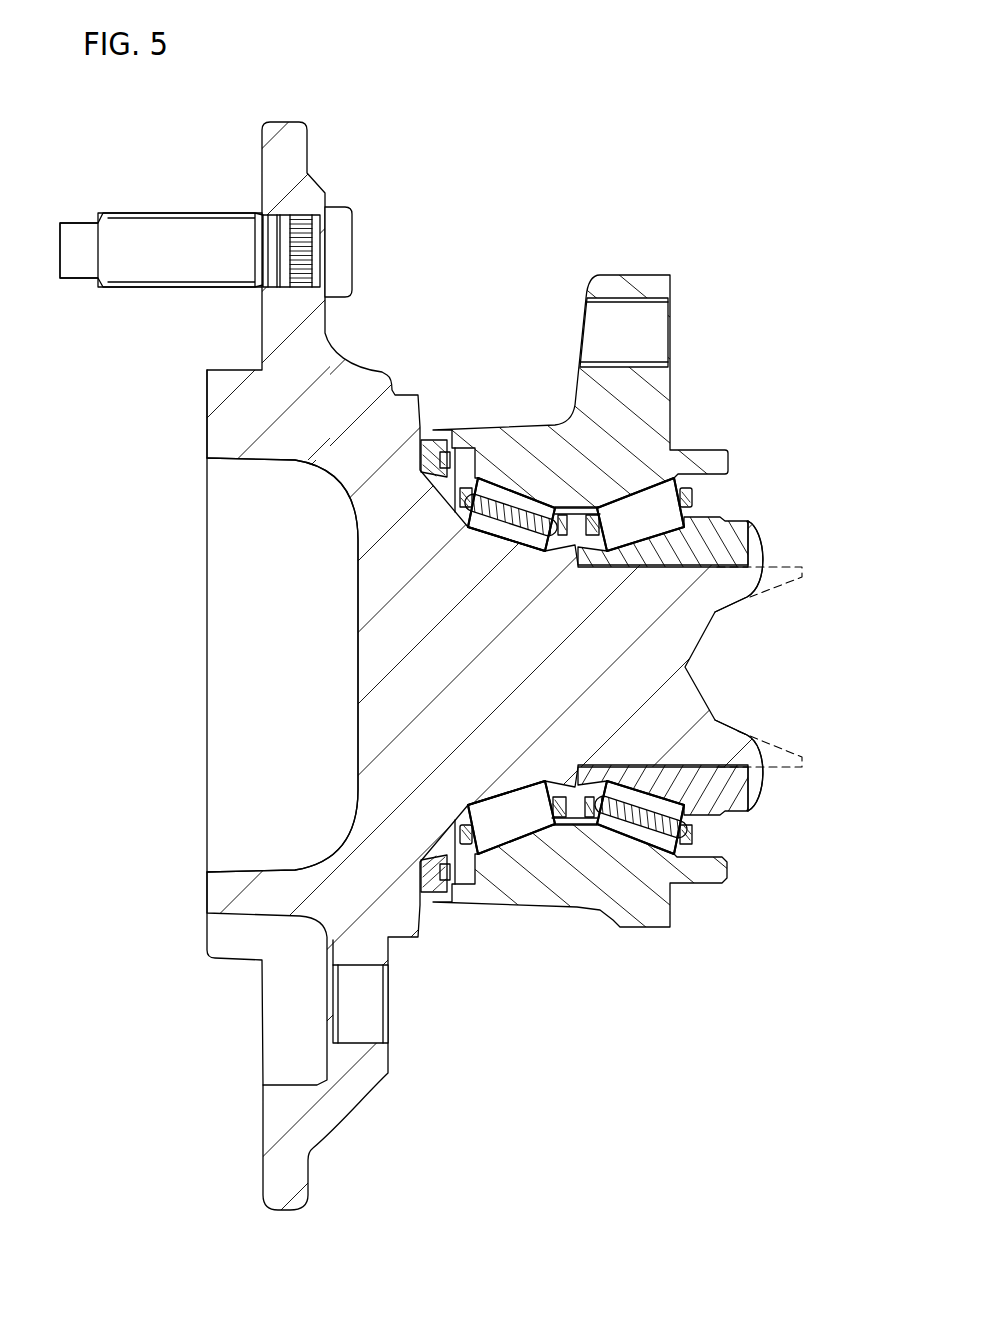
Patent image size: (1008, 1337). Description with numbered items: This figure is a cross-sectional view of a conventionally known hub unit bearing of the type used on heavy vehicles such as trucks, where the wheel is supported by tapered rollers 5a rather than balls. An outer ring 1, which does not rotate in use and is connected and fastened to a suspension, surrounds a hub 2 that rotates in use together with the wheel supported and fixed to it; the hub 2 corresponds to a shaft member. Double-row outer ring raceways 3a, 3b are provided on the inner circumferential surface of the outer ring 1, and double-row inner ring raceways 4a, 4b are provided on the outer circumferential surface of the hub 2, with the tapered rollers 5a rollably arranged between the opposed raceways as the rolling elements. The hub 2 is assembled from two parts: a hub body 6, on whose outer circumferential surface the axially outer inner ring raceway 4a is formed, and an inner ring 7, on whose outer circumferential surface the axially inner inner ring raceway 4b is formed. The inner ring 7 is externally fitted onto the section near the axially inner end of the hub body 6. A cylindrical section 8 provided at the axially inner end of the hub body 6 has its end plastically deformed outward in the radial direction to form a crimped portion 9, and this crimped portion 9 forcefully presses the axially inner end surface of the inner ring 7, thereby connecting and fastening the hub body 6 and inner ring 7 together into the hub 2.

The outer ring 1 is at (683, 274).
The hub 2 is at (197, 445).
The outer ring raceway 3a is at (490, 492).
The outer ring raceway 3b is at (652, 503).
The inner ring raceway 4a is at (488, 532).
The inner ring raceway 4b is at (735, 602).
The tapered rollers 5a is at (547, 500).
The hub body 6 is at (390, 557).
The inner ring 7 is at (712, 527).
The cylindrical section 8 is at (735, 748).
The crimped portion 9 is at (750, 555).